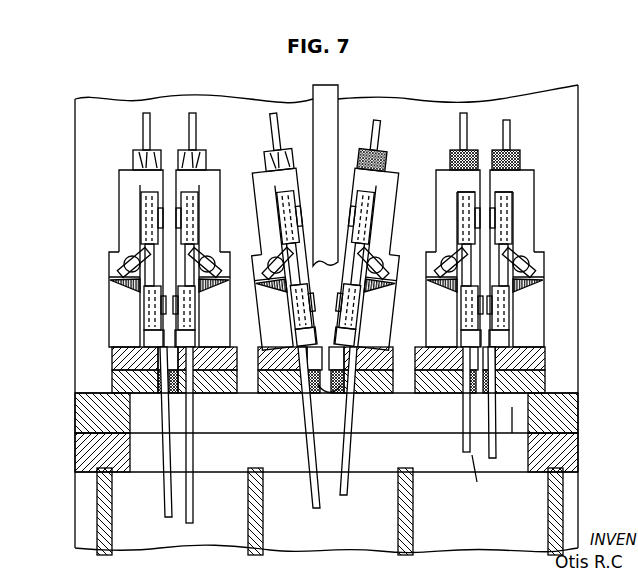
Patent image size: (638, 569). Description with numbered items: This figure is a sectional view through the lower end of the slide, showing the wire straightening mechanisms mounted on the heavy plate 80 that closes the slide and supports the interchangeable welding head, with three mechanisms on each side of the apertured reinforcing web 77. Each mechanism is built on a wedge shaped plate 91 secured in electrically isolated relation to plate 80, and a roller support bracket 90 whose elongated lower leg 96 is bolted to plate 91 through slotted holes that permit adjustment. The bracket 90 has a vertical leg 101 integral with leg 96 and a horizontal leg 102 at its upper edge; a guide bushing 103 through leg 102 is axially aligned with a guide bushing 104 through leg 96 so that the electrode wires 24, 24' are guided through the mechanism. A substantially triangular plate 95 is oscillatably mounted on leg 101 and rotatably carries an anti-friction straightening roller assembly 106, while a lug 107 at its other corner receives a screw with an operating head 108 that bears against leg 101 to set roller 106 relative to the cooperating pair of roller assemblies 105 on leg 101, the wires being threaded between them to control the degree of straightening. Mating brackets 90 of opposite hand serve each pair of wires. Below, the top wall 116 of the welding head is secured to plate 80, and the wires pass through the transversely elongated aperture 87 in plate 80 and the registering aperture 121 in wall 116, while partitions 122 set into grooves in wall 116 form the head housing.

The electrode wire 24' is at (125, 113).
The electrode wire 24 is at (206, 113).
The apertured reinforcing web 77 is at (344, 166).
The guide bushing 103 is at (138, 160).
The horizontal leg 102 is at (158, 188).
The roller support bracket 90 is at (212, 162).
The vertical leg 101 is at (128, 193).
The roller assembly 105 is at (143, 220).
The operating head 108 is at (125, 258).
The triangular plate 95 is at (118, 340).
The wedge shaped plate 91 is at (125, 388).
The top wall 116 is at (92, 445).
The straightening roller assembly 106 is at (360, 273).
The guide bushing 104 is at (178, 396).
The lug 107 is at (545, 268).
The lower leg 96 is at (530, 348).
The plate 80 is at (578, 412).
The aperture 87 is at (511, 432).
The aperture 121 is at (486, 479).
The partition 122 is at (112, 512).